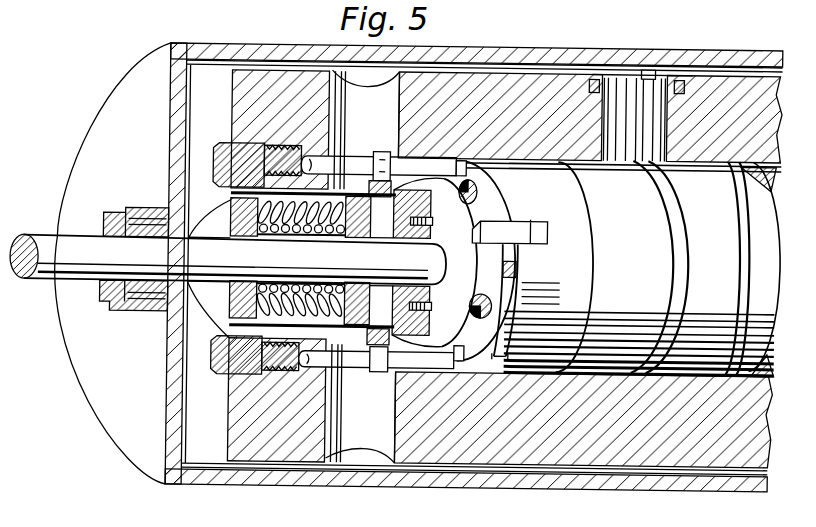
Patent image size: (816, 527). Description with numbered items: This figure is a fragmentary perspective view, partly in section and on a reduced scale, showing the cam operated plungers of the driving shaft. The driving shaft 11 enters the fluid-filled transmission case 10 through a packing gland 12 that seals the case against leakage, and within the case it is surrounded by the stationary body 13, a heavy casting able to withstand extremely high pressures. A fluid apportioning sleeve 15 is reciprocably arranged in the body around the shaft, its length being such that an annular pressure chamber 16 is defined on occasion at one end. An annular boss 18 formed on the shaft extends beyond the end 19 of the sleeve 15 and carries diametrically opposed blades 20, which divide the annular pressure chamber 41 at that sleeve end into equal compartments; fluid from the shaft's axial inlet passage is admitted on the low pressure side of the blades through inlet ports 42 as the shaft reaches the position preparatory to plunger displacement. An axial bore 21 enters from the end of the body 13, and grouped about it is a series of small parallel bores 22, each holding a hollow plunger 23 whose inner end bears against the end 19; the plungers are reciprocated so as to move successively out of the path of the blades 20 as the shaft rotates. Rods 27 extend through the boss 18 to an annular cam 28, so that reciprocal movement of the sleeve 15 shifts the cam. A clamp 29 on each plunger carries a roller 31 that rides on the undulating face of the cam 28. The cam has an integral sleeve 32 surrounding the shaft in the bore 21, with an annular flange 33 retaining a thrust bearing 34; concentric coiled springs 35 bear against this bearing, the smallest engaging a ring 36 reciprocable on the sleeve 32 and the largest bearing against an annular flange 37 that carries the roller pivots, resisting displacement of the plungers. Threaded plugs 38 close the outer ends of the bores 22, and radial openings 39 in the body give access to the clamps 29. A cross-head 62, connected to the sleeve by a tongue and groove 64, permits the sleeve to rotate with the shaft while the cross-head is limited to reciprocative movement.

The transmission case 10 is at (498, 62).
The driving shaft 11 is at (43, 282).
The packing gland 12 is at (117, 311).
The body 13 is at (461, 455).
The fluid apportioning sleeve 15 is at (640, 293).
The annular pressure chamber 16 is at (761, 180).
The annular boss 18 is at (607, 291).
The end of the sleeve 19 is at (507, 257).
The blades 20 is at (477, 230).
The axial bore 21 is at (220, 314).
The parallel bores 22 is at (340, 141).
The hollow plunger 23 is at (347, 164).
The rod 27 is at (412, 311).
The annular cam 28 is at (428, 218).
The clamp 29 is at (386, 152).
The roller 31 is at (420, 331).
The sleeve 32 is at (278, 238).
The annular flange 33 is at (218, 230).
The thrust bearing 34 is at (240, 238).
The coiled springs 35 is at (287, 317).
The ring 36 is at (377, 240).
The annular flange 37 is at (337, 313).
The threaded plugs 38 is at (215, 150).
The radial openings 39 is at (331, 69).
The annular pressure chamber 41 is at (488, 213).
The pin 42 is at (474, 190).
The cross-head 62 is at (661, 68).
The tongue and groove 64 is at (634, 175).